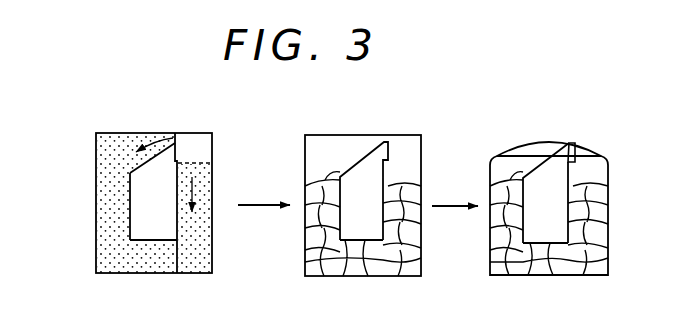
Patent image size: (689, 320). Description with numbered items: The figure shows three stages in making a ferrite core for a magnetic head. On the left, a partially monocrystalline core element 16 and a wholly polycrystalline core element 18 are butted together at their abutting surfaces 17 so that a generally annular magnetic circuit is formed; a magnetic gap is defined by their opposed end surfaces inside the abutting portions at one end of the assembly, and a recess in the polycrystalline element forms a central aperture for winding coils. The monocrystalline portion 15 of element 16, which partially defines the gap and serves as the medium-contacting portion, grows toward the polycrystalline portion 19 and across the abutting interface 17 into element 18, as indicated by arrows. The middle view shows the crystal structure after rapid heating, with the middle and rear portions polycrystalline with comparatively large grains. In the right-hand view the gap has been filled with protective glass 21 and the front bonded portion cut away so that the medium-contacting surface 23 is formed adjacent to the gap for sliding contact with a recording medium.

The monocrystalline portion 15 is at (207, 145).
The partially monocrystalline core element 16 is at (214, 226).
The abutting surfaces 17 is at (174, 134).
The wholly polycrystalline core element 18 is at (94, 216).
The polycrystalline portion 19 is at (207, 177).
The protective glass 21 is at (569, 163).
The medium-contacting surface 23 is at (522, 143).